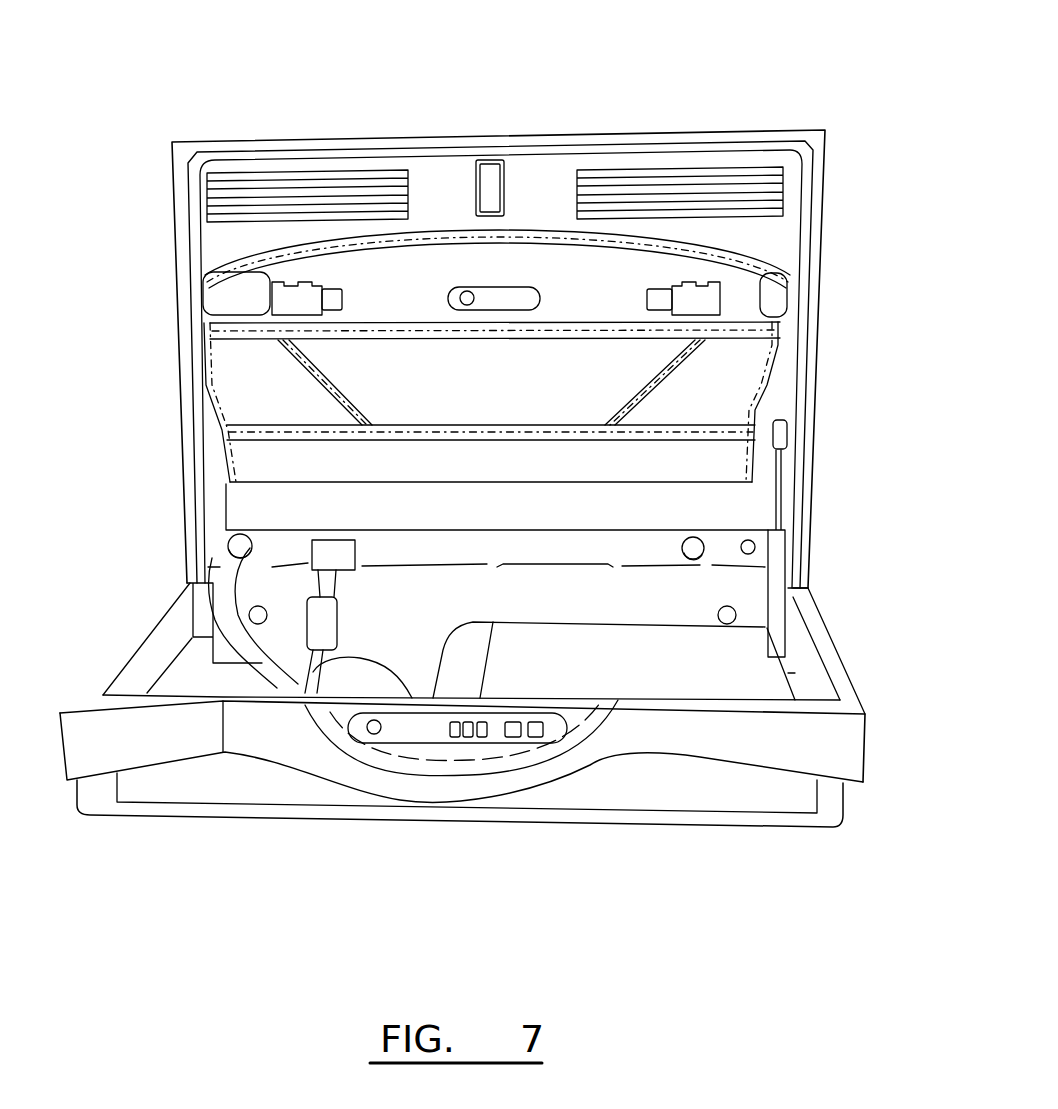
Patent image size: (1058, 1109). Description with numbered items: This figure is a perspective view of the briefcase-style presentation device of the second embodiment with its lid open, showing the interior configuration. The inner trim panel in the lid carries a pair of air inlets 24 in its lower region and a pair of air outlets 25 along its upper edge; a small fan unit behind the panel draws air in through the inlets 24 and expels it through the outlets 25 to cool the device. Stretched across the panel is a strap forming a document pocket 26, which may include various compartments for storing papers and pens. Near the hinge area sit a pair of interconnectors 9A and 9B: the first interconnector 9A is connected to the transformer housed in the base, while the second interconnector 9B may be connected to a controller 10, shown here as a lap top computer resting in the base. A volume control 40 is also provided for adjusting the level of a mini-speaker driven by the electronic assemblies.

The air outlets 25 is at (293, 170).
The document pocket 26 is at (747, 277).
The air inlets 24 is at (423, 562).
The volume control 40 is at (705, 547).
The controller 10 is at (690, 665).
The first interconnector 9A is at (232, 546).
The second interconnector 9B is at (320, 550).